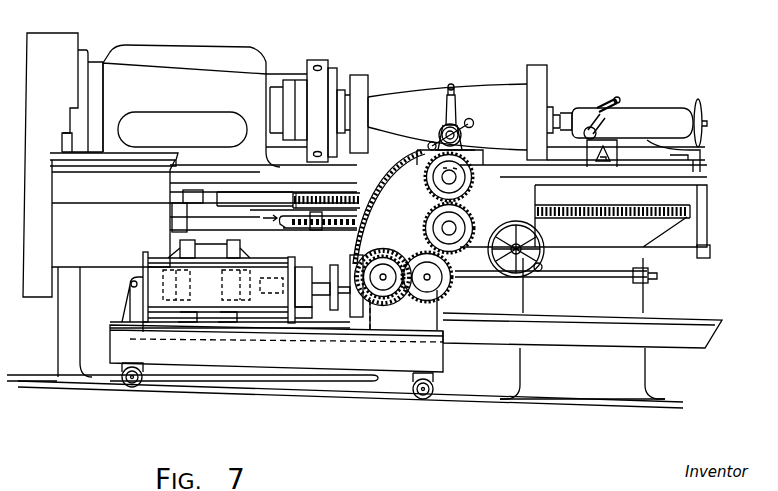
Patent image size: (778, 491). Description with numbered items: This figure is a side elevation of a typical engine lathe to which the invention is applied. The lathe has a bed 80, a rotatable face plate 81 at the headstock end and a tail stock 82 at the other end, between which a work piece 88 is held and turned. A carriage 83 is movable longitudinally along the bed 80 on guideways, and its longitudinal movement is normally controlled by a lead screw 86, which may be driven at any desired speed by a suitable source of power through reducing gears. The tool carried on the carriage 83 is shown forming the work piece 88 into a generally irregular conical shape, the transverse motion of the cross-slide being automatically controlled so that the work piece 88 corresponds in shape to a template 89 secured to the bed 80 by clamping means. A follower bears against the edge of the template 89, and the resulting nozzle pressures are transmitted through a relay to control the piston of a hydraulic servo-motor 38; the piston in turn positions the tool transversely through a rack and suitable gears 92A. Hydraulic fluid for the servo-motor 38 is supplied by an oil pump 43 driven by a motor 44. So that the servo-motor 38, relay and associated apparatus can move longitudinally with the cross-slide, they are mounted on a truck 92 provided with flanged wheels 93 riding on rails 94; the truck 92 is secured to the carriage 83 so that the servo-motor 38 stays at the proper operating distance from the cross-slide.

The servo-motor 38 is at (168, 316).
The oil pump 43 is at (300, 268).
The motor 44 is at (183, 258).
The bed 80 is at (643, 267).
The rotatable face plate 81 is at (320, 60).
The tail stock 82 is at (570, 108).
The carriage 83 is at (484, 215).
The lead screw 86 is at (577, 212).
The work piece 88 is at (447, 117).
The template 89 is at (388, 127).
The truck 92 is at (445, 352).
The gears 92A is at (450, 281).
The flanged wheels 93 is at (143, 385).
The rails 94 is at (292, 396).